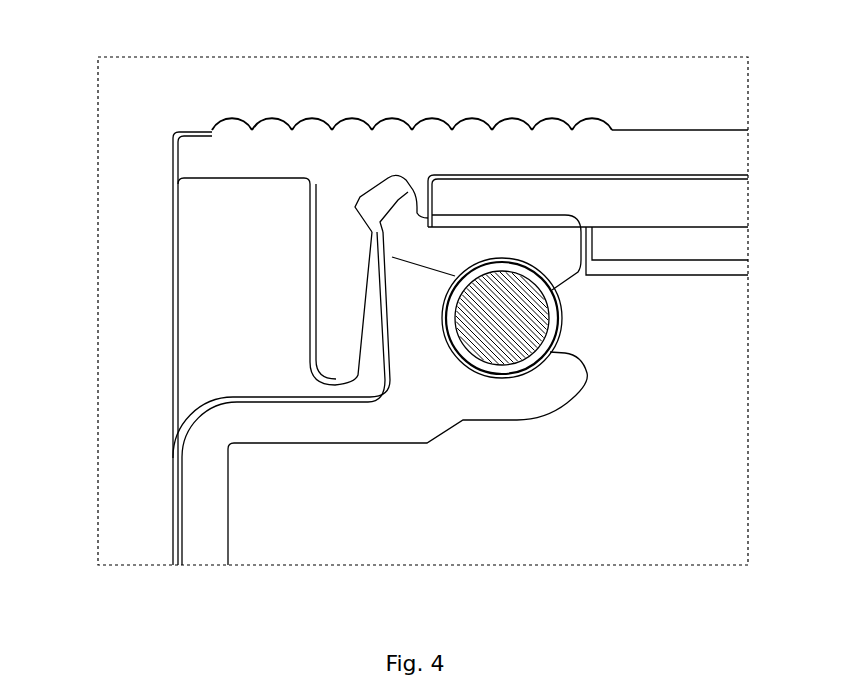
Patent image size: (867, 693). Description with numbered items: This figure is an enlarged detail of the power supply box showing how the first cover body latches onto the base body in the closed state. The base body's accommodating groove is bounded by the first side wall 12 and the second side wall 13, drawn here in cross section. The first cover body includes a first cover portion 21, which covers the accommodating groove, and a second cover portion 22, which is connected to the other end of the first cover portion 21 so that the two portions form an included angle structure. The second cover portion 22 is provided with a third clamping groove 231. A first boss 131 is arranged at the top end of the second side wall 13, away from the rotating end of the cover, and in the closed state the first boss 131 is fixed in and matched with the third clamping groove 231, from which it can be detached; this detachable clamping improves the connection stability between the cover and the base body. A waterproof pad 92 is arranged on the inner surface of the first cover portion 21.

The first side wall 12 is at (175, 340).
The second side wall 13 is at (217, 507).
The first cover portion 21 is at (647, 137).
The second cover portion 22 is at (347, 285).
The first boss 131 is at (322, 222).
The third clamping groove 231 is at (353, 203).
The waterproof pad 92 is at (697, 224).